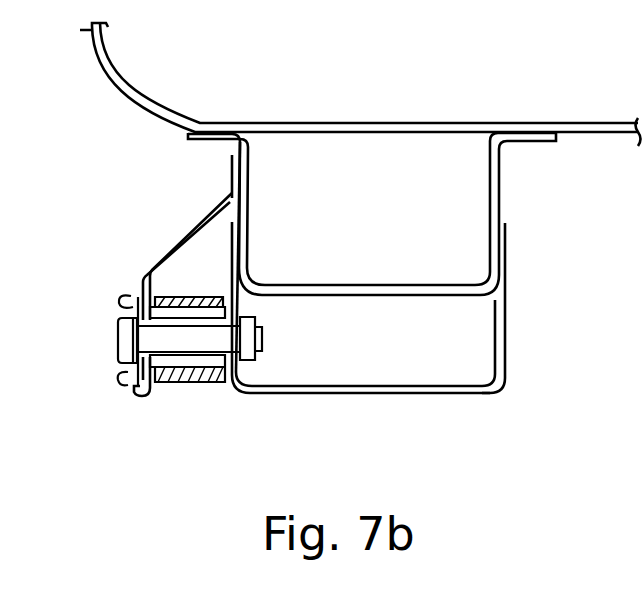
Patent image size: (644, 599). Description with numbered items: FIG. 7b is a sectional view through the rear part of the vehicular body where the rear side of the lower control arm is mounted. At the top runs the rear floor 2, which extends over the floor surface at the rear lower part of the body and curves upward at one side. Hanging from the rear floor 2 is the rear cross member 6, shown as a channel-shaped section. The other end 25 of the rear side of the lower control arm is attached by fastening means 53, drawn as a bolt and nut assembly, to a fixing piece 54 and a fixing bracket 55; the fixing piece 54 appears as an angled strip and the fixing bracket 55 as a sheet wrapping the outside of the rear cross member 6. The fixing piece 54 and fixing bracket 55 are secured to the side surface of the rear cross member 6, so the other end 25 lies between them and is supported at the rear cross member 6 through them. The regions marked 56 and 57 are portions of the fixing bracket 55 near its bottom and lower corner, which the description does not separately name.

The rear floor 2 is at (362, 122).
The rear cross member 6 is at (499, 186).
The other end of the rear side of the lower control arm 25 is at (182, 387).
The fastening means 53 is at (97, 338).
The fixing piece 54 is at (175, 247).
The fixing bracket 55 is at (506, 300).
The sheet bottom portion 56 is at (365, 395).
The sheet corner portion 57 is at (252, 395).